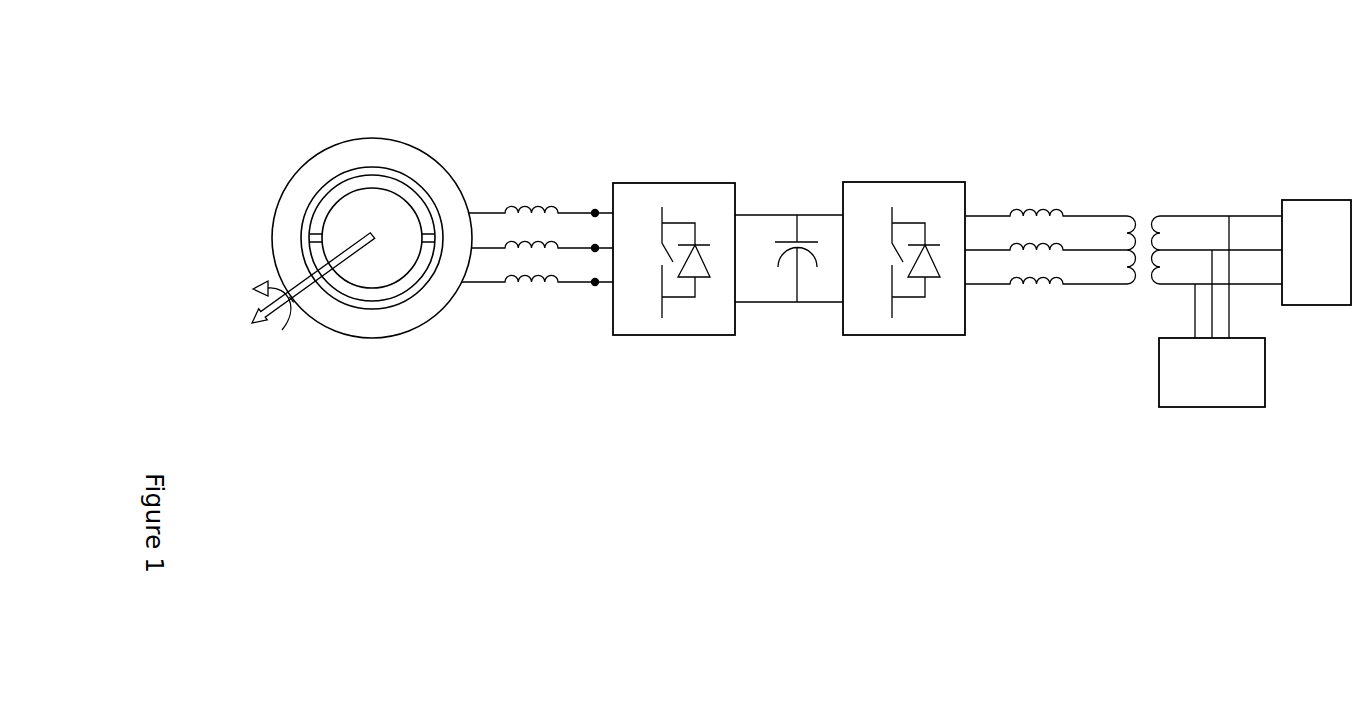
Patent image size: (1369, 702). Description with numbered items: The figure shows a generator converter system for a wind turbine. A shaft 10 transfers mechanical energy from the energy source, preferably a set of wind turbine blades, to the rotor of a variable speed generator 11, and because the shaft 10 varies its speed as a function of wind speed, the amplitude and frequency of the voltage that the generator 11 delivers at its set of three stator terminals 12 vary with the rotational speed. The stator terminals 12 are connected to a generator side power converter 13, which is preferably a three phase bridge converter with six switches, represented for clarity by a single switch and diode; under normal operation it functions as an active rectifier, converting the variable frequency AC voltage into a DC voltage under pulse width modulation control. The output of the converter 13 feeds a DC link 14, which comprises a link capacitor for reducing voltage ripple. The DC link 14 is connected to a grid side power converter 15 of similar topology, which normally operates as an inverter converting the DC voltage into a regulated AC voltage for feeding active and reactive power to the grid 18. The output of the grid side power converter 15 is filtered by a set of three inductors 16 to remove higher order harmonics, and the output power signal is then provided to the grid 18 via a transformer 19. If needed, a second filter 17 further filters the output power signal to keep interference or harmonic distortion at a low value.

The shaft 10 is at (265, 329).
The variable speed generator 11 is at (306, 164).
The stator terminals 12 is at (592, 281).
The generator side power converter 13 is at (688, 197).
The DC link 14 is at (797, 214).
The grid side power converter 15 is at (913, 197).
The inductors 16 is at (1053, 283).
The second filter 17 is at (1197, 388).
The grid 18 is at (1320, 217).
The transformer 19 is at (1141, 225).